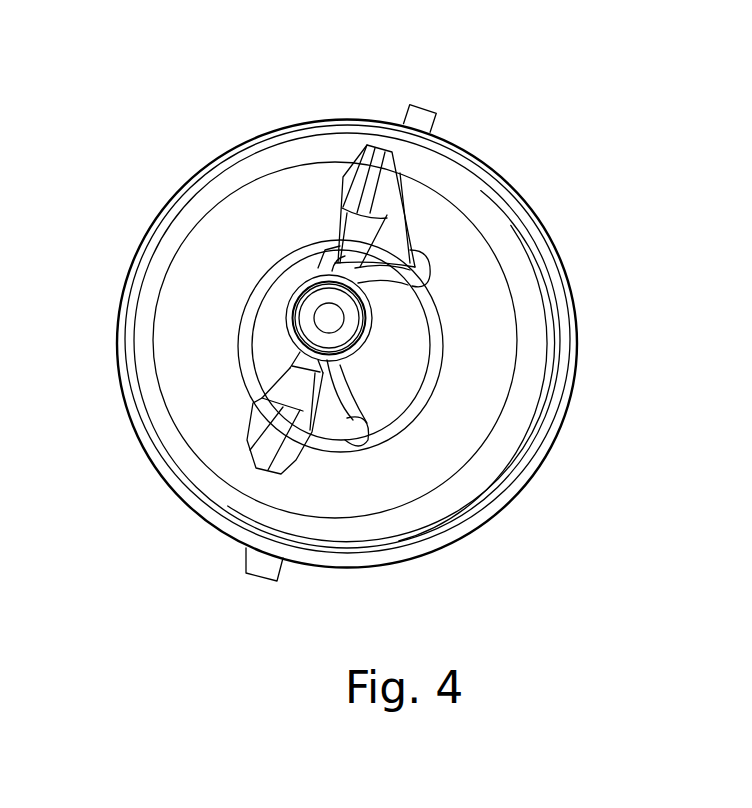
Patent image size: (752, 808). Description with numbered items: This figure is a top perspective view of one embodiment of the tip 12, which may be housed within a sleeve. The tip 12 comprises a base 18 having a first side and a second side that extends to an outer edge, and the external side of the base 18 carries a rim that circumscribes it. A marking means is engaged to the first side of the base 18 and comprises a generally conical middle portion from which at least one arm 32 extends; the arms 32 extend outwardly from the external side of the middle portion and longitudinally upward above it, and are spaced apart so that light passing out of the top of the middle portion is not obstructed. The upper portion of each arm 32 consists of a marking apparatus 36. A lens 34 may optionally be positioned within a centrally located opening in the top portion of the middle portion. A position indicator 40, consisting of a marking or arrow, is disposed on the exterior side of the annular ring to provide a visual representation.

The tip 12 is at (562, 132).
The base 18 is at (468, 262).
The arm 32 is at (401, 175).
The lens 34 is at (307, 322).
The marking apparatus 36 is at (353, 162).
The position indicator 40 is at (420, 108).